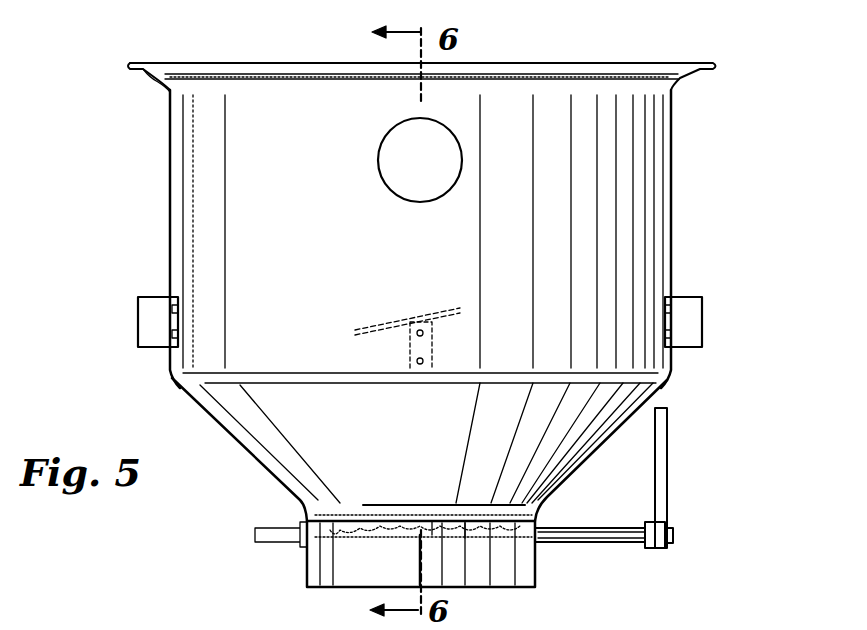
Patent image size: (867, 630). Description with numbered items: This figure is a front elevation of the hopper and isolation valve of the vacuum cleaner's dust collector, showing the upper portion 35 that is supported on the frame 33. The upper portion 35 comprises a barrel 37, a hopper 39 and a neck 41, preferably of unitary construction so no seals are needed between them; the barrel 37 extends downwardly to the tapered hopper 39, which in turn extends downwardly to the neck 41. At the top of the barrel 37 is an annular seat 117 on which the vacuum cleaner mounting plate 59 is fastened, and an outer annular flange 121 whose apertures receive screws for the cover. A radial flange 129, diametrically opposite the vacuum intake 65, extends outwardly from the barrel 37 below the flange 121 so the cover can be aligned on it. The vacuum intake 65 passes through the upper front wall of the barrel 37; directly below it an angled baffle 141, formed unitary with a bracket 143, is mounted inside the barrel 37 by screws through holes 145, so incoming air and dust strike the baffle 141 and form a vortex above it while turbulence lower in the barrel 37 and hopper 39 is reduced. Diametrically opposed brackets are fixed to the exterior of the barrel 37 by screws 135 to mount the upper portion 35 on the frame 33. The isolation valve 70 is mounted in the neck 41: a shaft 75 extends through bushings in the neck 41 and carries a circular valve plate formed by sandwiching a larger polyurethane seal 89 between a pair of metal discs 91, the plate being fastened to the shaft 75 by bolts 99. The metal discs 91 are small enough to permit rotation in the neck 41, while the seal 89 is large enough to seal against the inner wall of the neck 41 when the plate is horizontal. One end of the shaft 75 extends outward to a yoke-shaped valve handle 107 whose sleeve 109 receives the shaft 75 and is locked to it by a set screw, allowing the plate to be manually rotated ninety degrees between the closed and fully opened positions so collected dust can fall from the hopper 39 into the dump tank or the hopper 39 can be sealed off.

The upper portion 35 is at (126, 268).
The barrel 37 is at (168, 178).
The hopper 39 is at (245, 447).
The neck 41 is at (300, 565).
The plate 59 is at (540, 75).
The vacuum intake 65 is at (382, 178).
The isolation valve 70 is at (680, 534).
The shaft 75 is at (600, 530).
The polyurethane seal 89 is at (395, 515).
The metal discs 91 is at (430, 520).
The bolts 99 is at (363, 515).
The valve handle 107 is at (668, 440).
The sleeve 109 is at (655, 550).
The annular seat 117 is at (157, 78).
The outer annular flange 121 is at (135, 63).
The flange 129 is at (307, 80).
The frame 33 is at (138, 315).
The screws 135 is at (172, 334).
The baffle 141 is at (400, 322).
The bracket 143 is at (432, 345).
The holes 145 is at (417, 362).